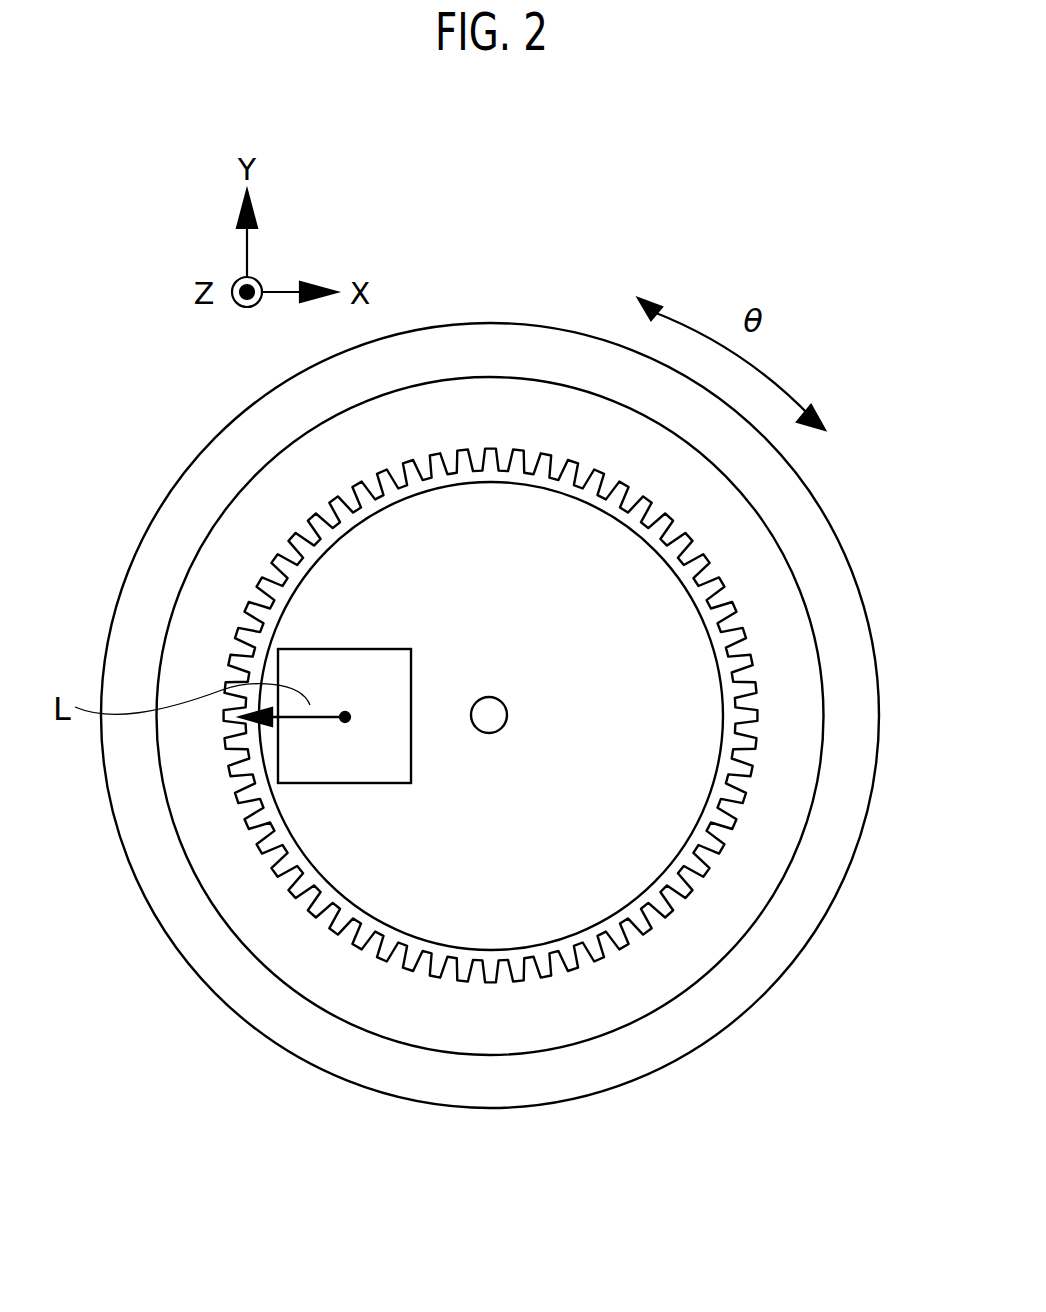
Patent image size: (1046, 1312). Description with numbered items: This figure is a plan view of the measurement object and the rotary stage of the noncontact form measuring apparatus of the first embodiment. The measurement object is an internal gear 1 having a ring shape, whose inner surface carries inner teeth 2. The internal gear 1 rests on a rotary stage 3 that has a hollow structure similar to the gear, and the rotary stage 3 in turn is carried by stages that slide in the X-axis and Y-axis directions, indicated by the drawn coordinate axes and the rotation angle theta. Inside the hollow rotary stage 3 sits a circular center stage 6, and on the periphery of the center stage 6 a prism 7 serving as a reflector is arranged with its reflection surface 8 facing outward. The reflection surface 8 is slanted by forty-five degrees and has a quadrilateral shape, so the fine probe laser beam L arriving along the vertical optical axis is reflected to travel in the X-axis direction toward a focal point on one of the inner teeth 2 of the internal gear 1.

The internal gear 1 is at (260, 917).
The inner teeth 2 is at (283, 582).
The rotary stage 3 is at (475, 1088).
The center stage 6 is at (685, 743).
The prism 7 is at (416, 672).
The reflection surface 8 is at (334, 763).